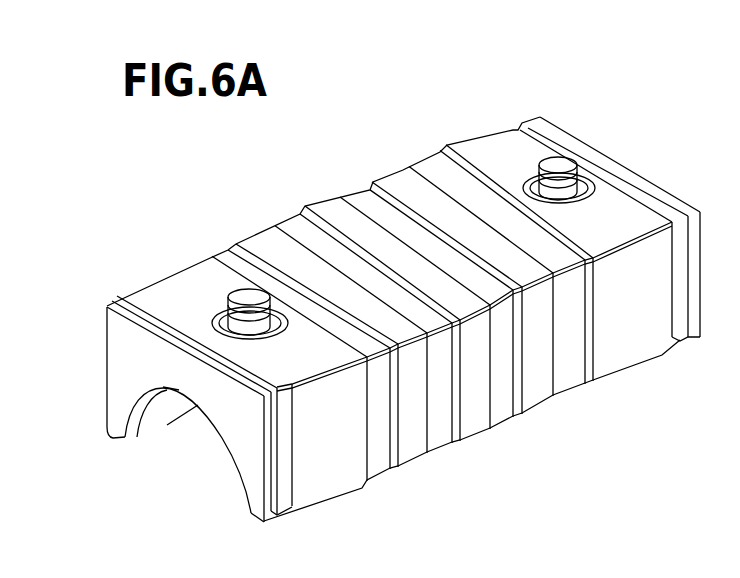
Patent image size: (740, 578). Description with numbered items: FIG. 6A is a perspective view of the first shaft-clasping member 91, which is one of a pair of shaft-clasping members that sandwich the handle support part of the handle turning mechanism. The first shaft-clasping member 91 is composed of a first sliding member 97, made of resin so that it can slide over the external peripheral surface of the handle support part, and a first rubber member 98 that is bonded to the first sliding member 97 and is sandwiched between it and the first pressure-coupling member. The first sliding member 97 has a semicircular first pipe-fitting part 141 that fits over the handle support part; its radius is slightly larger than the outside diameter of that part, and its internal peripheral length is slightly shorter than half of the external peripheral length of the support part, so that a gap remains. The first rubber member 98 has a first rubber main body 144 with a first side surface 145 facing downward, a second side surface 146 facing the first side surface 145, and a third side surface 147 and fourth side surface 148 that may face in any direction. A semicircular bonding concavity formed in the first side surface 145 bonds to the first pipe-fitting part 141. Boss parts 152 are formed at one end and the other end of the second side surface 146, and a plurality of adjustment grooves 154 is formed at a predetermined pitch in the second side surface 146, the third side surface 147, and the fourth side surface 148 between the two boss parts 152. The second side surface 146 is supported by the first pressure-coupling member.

The first shaft-clasping member 91 is at (107, 218).
The first sliding member 97 is at (125, 438).
The first rubber member 98 is at (160, 278).
The first pipe-fitting part 141 is at (163, 413).
The first rubber main body 144 is at (470, 147).
The first side surface 145 is at (609, 376).
The second side surface 146 is at (523, 157).
The third side surface 147 is at (630, 349).
The fourth side surface 148 is at (495, 127).
The boss parts 152 is at (194, 263).
The adjustment grooves 154 is at (293, 225).